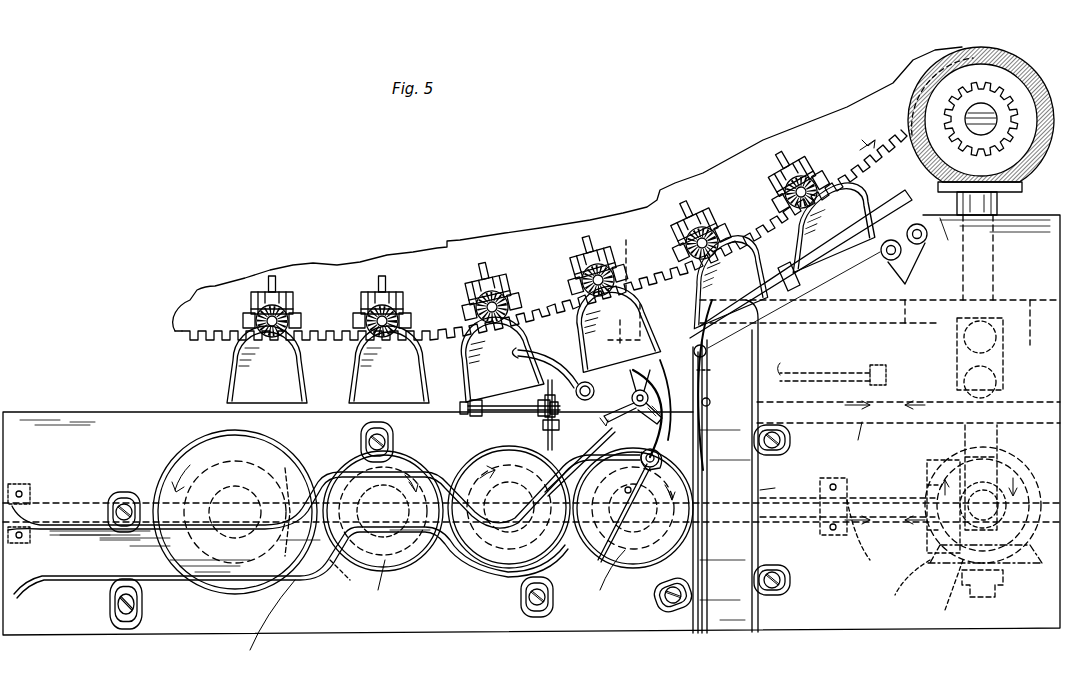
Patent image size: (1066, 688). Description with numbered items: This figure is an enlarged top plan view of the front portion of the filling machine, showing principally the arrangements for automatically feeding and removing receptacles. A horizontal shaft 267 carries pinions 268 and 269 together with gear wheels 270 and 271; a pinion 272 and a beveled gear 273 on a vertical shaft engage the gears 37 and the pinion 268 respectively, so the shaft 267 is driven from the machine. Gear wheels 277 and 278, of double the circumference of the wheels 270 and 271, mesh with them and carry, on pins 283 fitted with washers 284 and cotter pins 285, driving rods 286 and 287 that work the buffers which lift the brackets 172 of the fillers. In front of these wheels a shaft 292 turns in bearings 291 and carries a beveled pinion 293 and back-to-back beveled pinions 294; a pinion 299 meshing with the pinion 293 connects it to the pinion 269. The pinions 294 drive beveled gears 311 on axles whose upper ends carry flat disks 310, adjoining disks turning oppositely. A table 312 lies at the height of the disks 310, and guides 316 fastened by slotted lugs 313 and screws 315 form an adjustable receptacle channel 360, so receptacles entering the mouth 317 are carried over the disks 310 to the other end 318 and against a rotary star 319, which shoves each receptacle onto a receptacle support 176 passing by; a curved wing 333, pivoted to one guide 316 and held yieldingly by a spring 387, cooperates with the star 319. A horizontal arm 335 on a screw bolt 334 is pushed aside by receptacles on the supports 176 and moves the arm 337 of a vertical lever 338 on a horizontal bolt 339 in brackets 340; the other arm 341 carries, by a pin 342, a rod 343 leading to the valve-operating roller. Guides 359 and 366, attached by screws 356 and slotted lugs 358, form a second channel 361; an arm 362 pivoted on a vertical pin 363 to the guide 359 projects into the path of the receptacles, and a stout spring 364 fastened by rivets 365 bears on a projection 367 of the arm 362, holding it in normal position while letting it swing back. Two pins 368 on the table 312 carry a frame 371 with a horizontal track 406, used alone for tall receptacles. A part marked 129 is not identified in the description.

The gear 37 is at (897, 162).
The roller unit 129 is at (285, 310).
The bracket 172 is at (275, 345).
The receptacle support 176 is at (761, 234).
The horizontal shaft 267 is at (965, 210).
The pinion 268 is at (957, 193).
The pinion 269 is at (901, 585).
The gear wheel 270 is at (999, 358).
The gear wheel 271 is at (1010, 455).
The pinion 272 is at (930, 85).
The beveled gear 273 is at (915, 140).
The gear wheel 277 is at (870, 318).
The gear wheel 278 is at (864, 440).
The pin 283 is at (626, 240).
The washer 284 is at (888, 377).
The cotter pin 285 is at (888, 368).
The driving rod 286 is at (560, 342).
The driving rod 287 is at (796, 364).
The bearing 291 is at (22, 484).
The shaft 292 is at (862, 497).
The beveled pinion 293 is at (938, 458).
The beveled pinion 294 is at (318, 568).
The pinion 299 is at (959, 590).
The flat disk 310 is at (431, 610).
The beveled gear 311 is at (270, 460).
The table 312 is at (70, 412).
The slotted lug 313 is at (132, 492).
The screw 315 is at (140, 607).
The guide 316 is at (55, 522).
The mouth 317 is at (291, 562).
The end of channel 318 is at (619, 493).
The rotary star 319 is at (637, 397).
The curved wing 333 is at (680, 330).
The screw bolt 334 is at (592, 388).
The horizontal arm 335 is at (520, 300).
The arm 337 is at (385, 300).
The vertical lever 338 is at (435, 355).
The horizontal bolt 339 is at (505, 412).
The bracket 340 is at (465, 412).
The arm 341 is at (556, 408).
The pin 342 is at (559, 425).
The rod 343 is at (562, 418).
The screw 356 is at (790, 441).
The slotted lug 358 is at (790, 578).
The guide 359 is at (655, 593).
The receptacle channel 360 is at (500, 545).
The receptacle channel 361 is at (721, 486).
The arm 362 is at (706, 351).
The vertical pin 363 is at (698, 360).
The stout spring 364 is at (709, 401).
The rivet 365 is at (706, 420).
The guide 366 is at (779, 487).
The projection 367 is at (708, 380).
The pin 368 is at (910, 258).
The frame 371 is at (880, 240).
The spring 387 is at (600, 565).
The horizontal track 406 is at (880, 225).